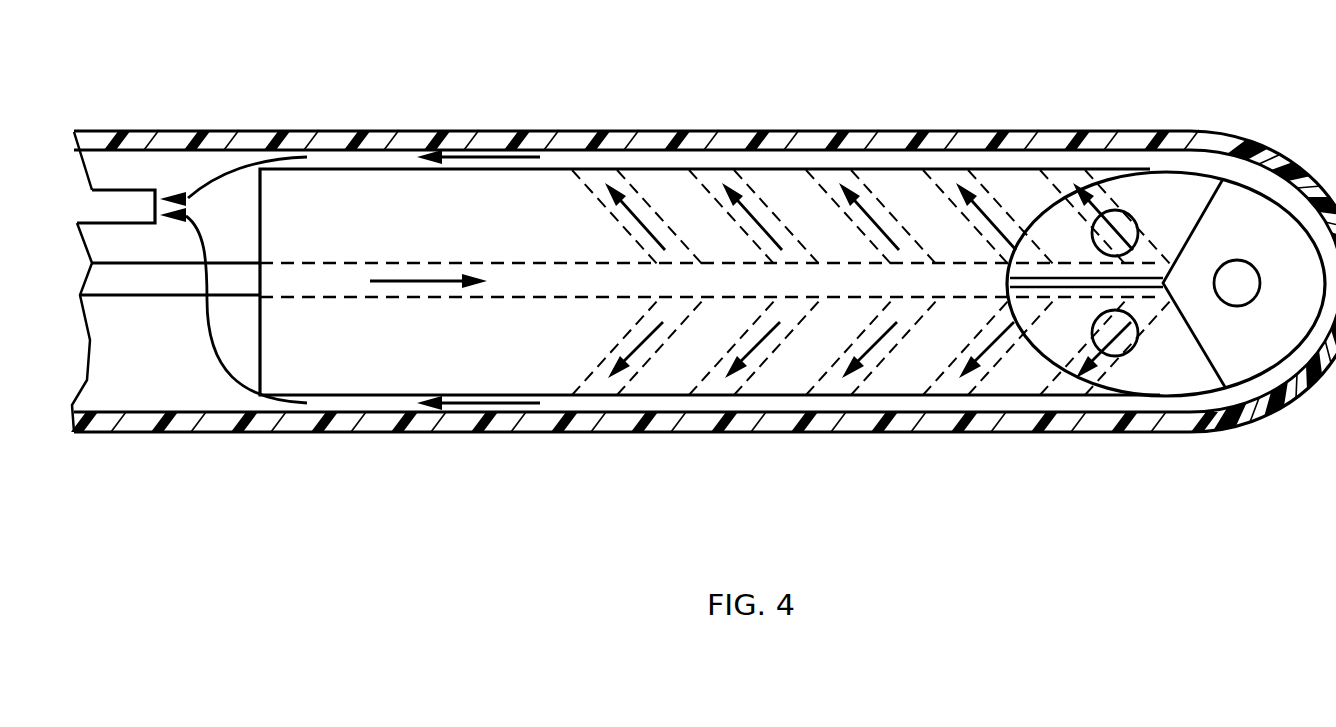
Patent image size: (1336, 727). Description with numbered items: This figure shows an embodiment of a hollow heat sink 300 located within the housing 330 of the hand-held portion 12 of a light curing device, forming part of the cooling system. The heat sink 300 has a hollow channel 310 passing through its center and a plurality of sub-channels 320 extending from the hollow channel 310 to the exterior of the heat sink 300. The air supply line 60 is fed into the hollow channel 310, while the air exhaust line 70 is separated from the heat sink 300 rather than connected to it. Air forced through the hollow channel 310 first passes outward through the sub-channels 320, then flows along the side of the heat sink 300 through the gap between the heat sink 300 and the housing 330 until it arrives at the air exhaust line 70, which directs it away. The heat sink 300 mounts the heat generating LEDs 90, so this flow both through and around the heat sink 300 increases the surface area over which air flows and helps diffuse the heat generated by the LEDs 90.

The hand-held portion 12 is at (487, 433).
The air supply line 60 is at (168, 298).
The air exhaust line 70 is at (128, 190).
The LEDs 90 is at (1237, 283).
The hollow heat sink 300 is at (355, 190).
The hollow channel 310 is at (555, 288).
The sub-channels 320 is at (1063, 190).
The housing 330 is at (357, 432).